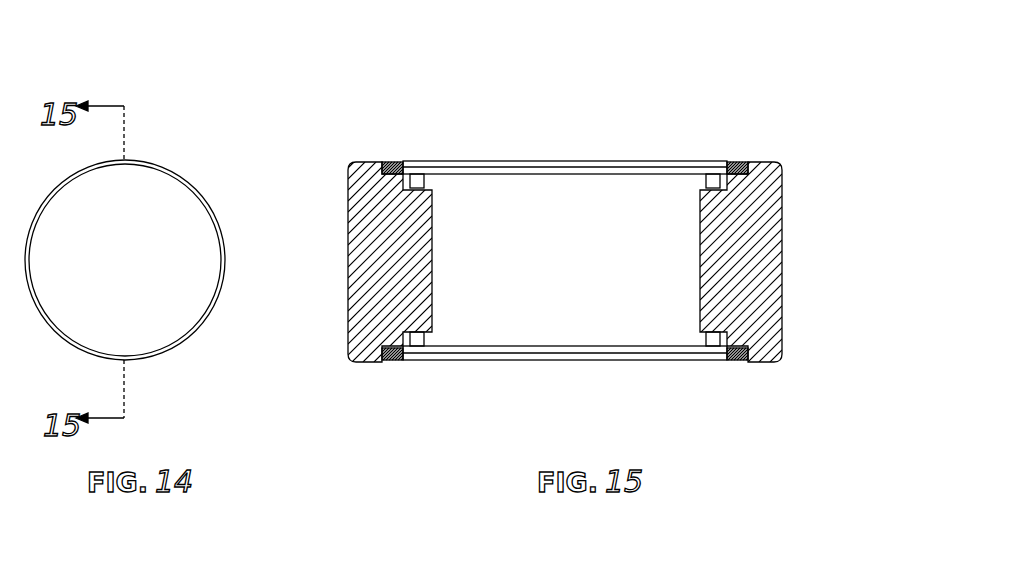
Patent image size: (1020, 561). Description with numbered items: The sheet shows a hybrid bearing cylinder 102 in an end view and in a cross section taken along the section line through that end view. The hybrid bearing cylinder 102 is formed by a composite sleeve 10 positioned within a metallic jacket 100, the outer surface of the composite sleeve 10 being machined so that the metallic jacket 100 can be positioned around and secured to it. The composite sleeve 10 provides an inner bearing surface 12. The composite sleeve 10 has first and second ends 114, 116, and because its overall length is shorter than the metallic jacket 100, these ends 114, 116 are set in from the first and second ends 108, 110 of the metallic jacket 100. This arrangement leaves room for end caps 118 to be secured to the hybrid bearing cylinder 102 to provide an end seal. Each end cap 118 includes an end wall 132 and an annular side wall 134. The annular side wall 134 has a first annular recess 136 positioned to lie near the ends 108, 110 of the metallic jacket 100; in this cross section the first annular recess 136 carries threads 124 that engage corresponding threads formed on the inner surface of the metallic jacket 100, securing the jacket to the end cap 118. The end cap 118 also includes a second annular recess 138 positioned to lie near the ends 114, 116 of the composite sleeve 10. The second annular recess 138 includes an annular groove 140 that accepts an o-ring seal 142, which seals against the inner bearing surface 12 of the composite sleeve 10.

In FIG. 15, the composite sleeve 10 is at (554, 170).
In FIG. 15, the inner bearing surface 12 is at (613, 330).
In FIG. 15, the metallic jacket 100 is at (468, 165).
In FIG. 15, the hybrid bearing cylinder 102 is at (576, 228).
In FIG. 15, the first end of metallic jacket 108 is at (737, 162).
In FIG. 15, the second end of metallic jacket 110 is at (394, 162).
In FIG. 15, the first end of composite sleeve 114 is at (755, 346).
In FIG. 15, the second end of composite sleeve 116 is at (410, 345).
In FIG. 14, the end cap 118 is at (158, 186).
In FIG. 15, the end cap 118 is at (766, 176).
In FIG. 15, the threads 124 is at (384, 178).
In FIG. 15, the end wall 132 is at (783, 212).
In FIG. 15, the annular side wall 134 is at (766, 362).
In FIG. 15, the first annular recess 136 is at (740, 362).
In FIG. 15, the second annular recess 138 is at (704, 352).
In FIG. 15, the annular groove 140 is at (735, 343).
In FIG. 15, the o-ring seal 142 is at (713, 176).